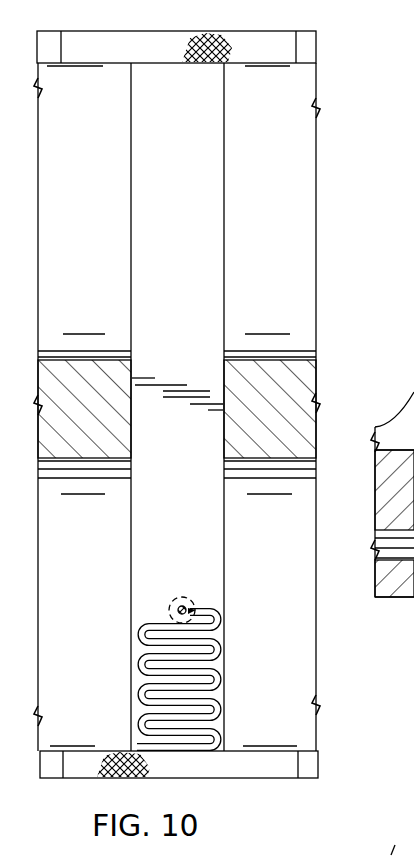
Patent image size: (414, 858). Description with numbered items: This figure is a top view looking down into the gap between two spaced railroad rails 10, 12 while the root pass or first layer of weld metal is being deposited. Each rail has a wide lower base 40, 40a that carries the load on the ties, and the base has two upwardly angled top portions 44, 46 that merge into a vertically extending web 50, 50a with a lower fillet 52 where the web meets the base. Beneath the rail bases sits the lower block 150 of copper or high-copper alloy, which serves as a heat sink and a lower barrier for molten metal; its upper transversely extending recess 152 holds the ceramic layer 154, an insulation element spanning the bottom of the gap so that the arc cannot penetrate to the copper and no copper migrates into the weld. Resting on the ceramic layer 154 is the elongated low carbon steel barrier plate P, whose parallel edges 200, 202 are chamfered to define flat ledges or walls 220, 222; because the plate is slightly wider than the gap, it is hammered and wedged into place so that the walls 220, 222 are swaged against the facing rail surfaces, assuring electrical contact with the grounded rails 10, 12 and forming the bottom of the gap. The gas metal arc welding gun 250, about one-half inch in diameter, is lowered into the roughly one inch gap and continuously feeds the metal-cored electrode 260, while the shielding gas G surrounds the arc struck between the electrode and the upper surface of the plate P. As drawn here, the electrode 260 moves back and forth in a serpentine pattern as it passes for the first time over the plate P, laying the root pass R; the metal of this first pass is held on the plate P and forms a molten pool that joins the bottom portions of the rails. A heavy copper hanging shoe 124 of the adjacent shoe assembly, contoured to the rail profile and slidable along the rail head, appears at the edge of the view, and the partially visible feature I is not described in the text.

The rail 10 is at (321, 152).
The rail 12 is at (134, 133).
The lower base 40 is at (309, 219).
The lower base 40a is at (136, 227).
The upwardly angled top portion 44 is at (291, 592).
The upwardly angled top portion 46 is at (282, 252).
The web 50 is at (299, 422).
The web 50a is at (87, 370).
The lower fillet 52 is at (289, 466).
The lower block 150 is at (320, 765).
The upper transversely extending recess 152 is at (288, 47).
The ceramic layer 154 is at (258, 42).
The parallel edge 200 is at (223, 303).
The parallel edge 202 is at (132, 278).
The flat ledge or wall 220 is at (226, 178).
The flat ledge or wall 222 is at (131, 185).
The gas metal arc welding gun 250 is at (163, 610).
The metal-cored electrode 260 is at (184, 611).
The barrier plate P is at (200, 270).
The root pass R is at (217, 638).
The shielding gas G is at (392, 494).
The adjacent figure element I is at (394, 549).
The hanging shoe 124 is at (394, 839).